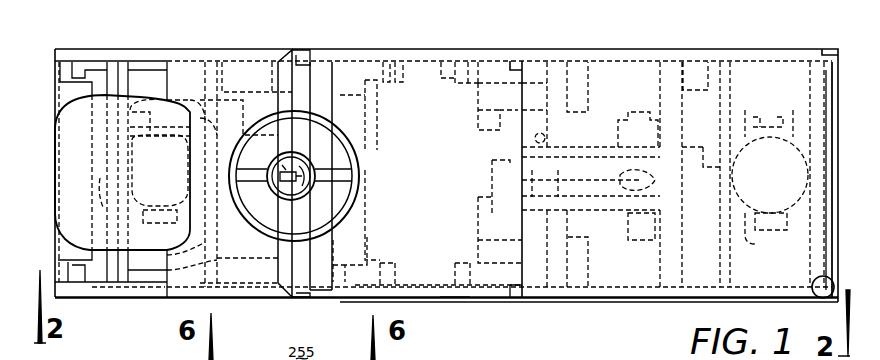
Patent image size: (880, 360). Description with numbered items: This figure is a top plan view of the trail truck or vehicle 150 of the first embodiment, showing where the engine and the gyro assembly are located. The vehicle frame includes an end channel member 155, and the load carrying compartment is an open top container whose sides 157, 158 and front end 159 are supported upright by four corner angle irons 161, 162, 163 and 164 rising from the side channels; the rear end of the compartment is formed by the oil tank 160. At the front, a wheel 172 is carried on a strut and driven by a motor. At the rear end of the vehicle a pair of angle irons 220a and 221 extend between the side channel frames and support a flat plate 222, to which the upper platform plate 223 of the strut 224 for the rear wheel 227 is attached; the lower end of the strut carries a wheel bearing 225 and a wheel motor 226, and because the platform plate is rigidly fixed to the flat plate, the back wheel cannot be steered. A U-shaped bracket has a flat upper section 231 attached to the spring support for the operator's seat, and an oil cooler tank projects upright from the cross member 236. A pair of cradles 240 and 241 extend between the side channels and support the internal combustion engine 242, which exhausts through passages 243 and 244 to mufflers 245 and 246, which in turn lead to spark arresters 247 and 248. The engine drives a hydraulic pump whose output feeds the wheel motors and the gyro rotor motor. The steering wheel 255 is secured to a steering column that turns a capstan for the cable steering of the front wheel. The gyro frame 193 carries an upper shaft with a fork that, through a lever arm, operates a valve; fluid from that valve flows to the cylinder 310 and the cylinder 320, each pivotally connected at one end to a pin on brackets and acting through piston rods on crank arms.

The trail truck or vehicle 150 is at (603, 300).
The end channel member 155 is at (55, 125).
The cross member 236 is at (63, 70).
The spark arrester 248 is at (78, 74).
The flat upper section 231 is at (112, 84).
The angle iron 221 is at (128, 62).
The wheel motor 226 is at (159, 103).
The strut 224 is at (190, 112).
The wheel 227 is at (96, 180).
The flat plate 222 is at (154, 264).
The wheel bearing 225 is at (111, 273).
The spark arrester 247 is at (78, 272).
The angle iron 220a is at (214, 76).
The upper platform plate 223 is at (239, 117).
The muffler 245 is at (246, 282).
The steering wheel 255 is at (356, 178).
The muffler 246 is at (267, 75).
The corner angle iron 163 is at (300, 55).
The corner angle iron 164 is at (300, 297).
The oil tank 160 is at (322, 65).
The exhaust passage 244 is at (372, 98).
The cradle 240 is at (389, 62).
The cradle 241 is at (464, 62).
The internal combustion engine 242 is at (438, 184).
The exhaust passage 243 is at (342, 258).
The cylinder 320 is at (494, 84).
The cylinder 310 is at (491, 265).
The side 157 is at (446, 300).
The gyro frame 193 is at (634, 210).
The side 158 is at (641, 61).
The wheel 172 is at (770, 187).
The corner angle iron 161 is at (813, 297).
The corner angle iron 162 is at (843, 58).
The front end 159 is at (858, 93).